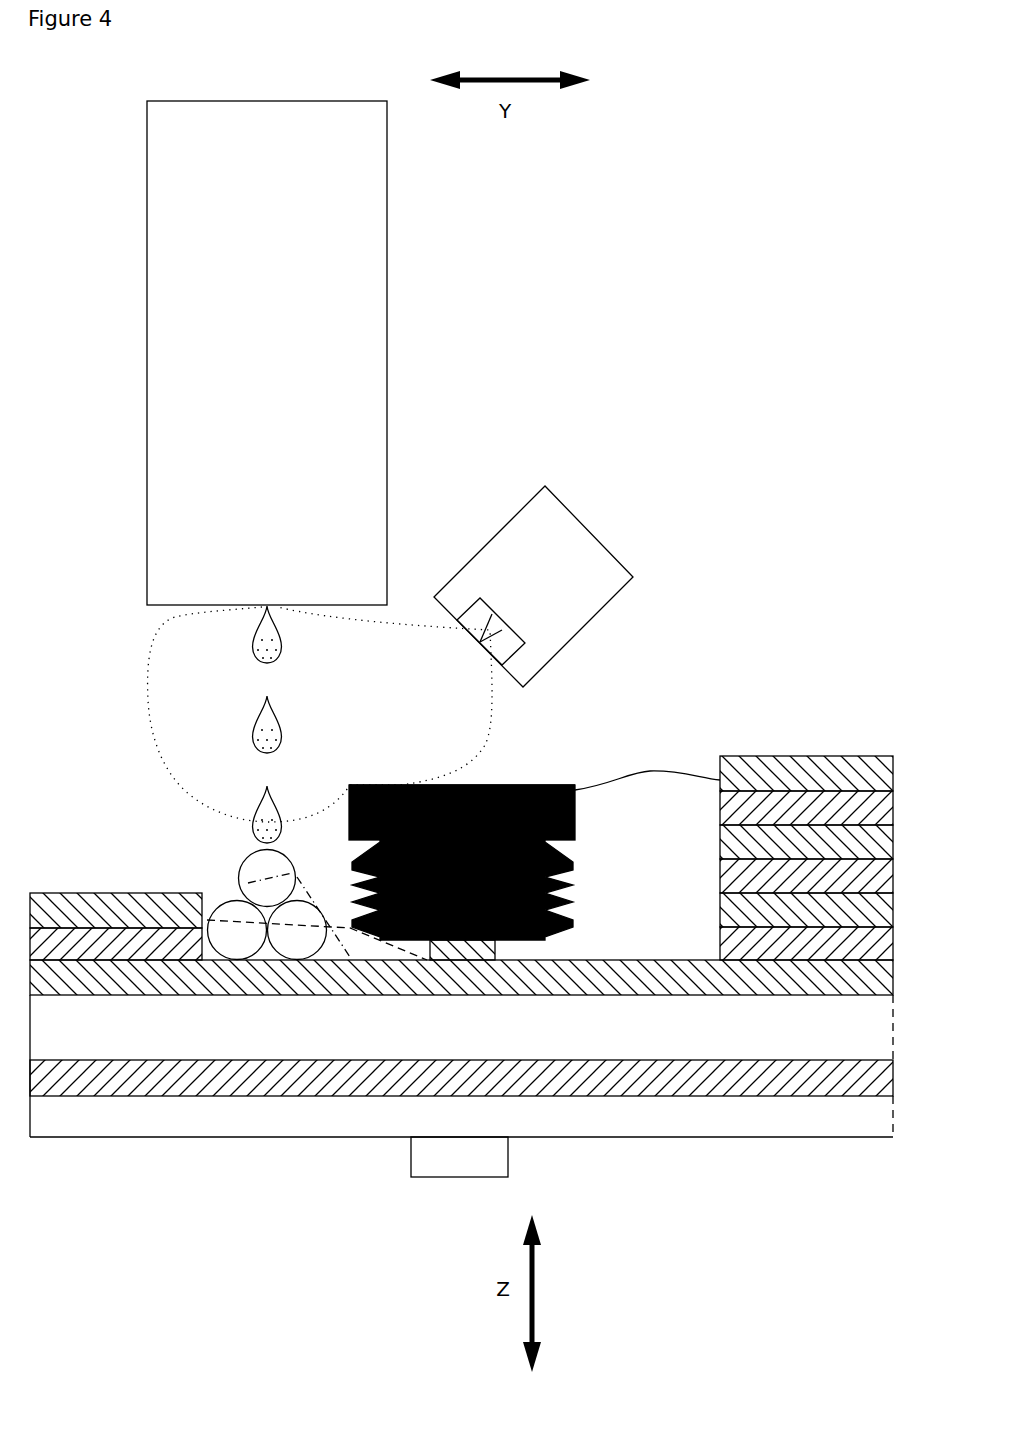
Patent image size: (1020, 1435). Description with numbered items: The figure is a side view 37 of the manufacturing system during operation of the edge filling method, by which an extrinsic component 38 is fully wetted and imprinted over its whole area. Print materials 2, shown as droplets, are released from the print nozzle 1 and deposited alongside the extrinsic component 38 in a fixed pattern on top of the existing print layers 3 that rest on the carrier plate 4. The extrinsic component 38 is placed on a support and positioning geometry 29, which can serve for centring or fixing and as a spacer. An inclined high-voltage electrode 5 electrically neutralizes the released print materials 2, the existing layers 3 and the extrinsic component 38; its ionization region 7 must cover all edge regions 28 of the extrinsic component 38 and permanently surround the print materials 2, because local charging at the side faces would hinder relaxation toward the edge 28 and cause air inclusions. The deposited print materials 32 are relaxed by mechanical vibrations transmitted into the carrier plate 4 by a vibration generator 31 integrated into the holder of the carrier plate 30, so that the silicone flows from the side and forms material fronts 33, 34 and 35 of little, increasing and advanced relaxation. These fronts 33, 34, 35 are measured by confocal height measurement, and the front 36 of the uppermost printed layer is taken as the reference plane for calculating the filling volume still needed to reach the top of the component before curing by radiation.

The print nozzle 1 is at (235, 353).
The print materials 2 is at (177, 724).
The layers of the shaped article 3 is at (116, 906).
The carrier plate 4 is at (461, 1086).
The high-voltage electrode 5 is at (546, 586).
The ionization region 7 is at (282, 714).
The edge region of extrinsic component 28 is at (514, 862).
The support and positioning geometry 29 is at (574, 1063).
The holder of the carrier plate 30 is at (405, 1203).
The vibration generator 31 is at (405, 1203).
The print materials deposited 32 is at (182, 828).
The material front 1 33 is at (168, 871).
The material front 2 34 is at (248, 888).
The material front 3 35 is at (669, 728).
The front of the uppermost printed material layer 36 is at (806, 813).
The side view of manufacturing system in the operation of the edge filling method 37 is at (748, 283).
The extrinsic component 38 is at (501, 729).